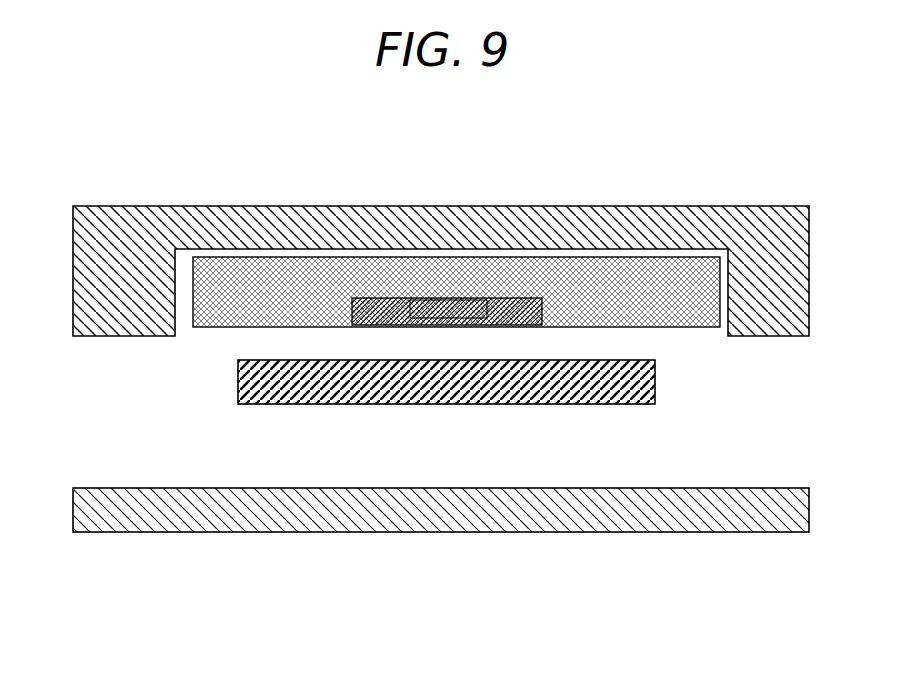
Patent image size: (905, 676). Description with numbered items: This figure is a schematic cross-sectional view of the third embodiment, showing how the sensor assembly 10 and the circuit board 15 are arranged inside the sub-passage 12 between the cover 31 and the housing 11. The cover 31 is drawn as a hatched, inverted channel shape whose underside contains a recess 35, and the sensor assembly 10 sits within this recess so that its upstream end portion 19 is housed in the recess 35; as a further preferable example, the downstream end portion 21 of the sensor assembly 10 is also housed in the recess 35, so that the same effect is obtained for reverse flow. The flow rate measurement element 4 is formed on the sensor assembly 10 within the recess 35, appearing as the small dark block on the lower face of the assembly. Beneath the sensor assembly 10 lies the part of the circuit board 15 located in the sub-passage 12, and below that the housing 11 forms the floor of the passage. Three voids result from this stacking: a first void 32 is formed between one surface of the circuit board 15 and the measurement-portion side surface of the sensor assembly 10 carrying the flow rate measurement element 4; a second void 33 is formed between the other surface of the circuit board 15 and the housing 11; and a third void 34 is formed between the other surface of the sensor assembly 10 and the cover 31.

The flow rate measurement element 4 is at (520, 296).
The sensor assembly 10 is at (633, 290).
The housing 11 is at (612, 508).
The sub-passage 12 is at (108, 347).
The circuit board 15 is at (645, 390).
The upstream end portion 19 is at (193, 292).
The downstream end portion 21 is at (722, 292).
The cover 31 is at (477, 228).
The first void 32 is at (325, 338).
The second void 33 is at (310, 450).
The third void 34 is at (350, 256).
The recess 35 is at (185, 248).